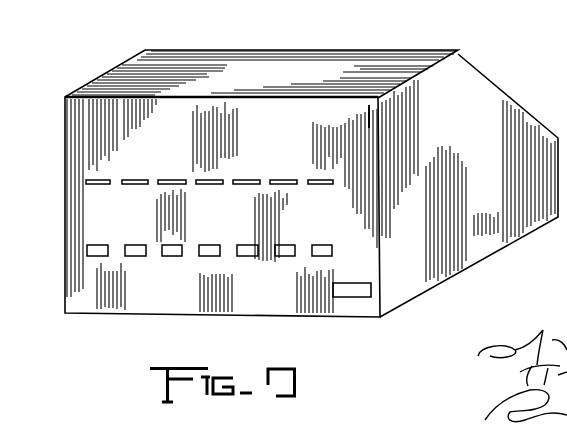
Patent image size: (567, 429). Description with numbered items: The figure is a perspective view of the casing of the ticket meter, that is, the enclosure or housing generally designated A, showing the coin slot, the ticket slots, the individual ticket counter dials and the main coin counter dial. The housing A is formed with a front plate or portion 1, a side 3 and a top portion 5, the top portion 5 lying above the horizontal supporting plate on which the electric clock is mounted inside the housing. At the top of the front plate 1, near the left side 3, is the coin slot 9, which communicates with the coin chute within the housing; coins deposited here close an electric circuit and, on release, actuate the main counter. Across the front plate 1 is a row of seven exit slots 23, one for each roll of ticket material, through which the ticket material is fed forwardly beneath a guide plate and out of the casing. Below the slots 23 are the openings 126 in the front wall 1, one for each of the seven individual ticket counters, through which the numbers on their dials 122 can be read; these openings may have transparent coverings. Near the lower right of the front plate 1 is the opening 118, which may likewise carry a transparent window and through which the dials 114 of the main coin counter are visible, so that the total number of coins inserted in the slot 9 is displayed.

The housing A is at (114, 71).
The front plate 1 is at (80, 139).
The side 3 is at (488, 102).
The top portion 5 is at (227, 63).
The coin slot 9 is at (368, 108).
The exit slot 23 is at (133, 179).
The dials 114 is at (356, 297).
The opening 118 is at (370, 298).
The dials 122 is at (100, 255).
The openings 126 is at (97, 247).